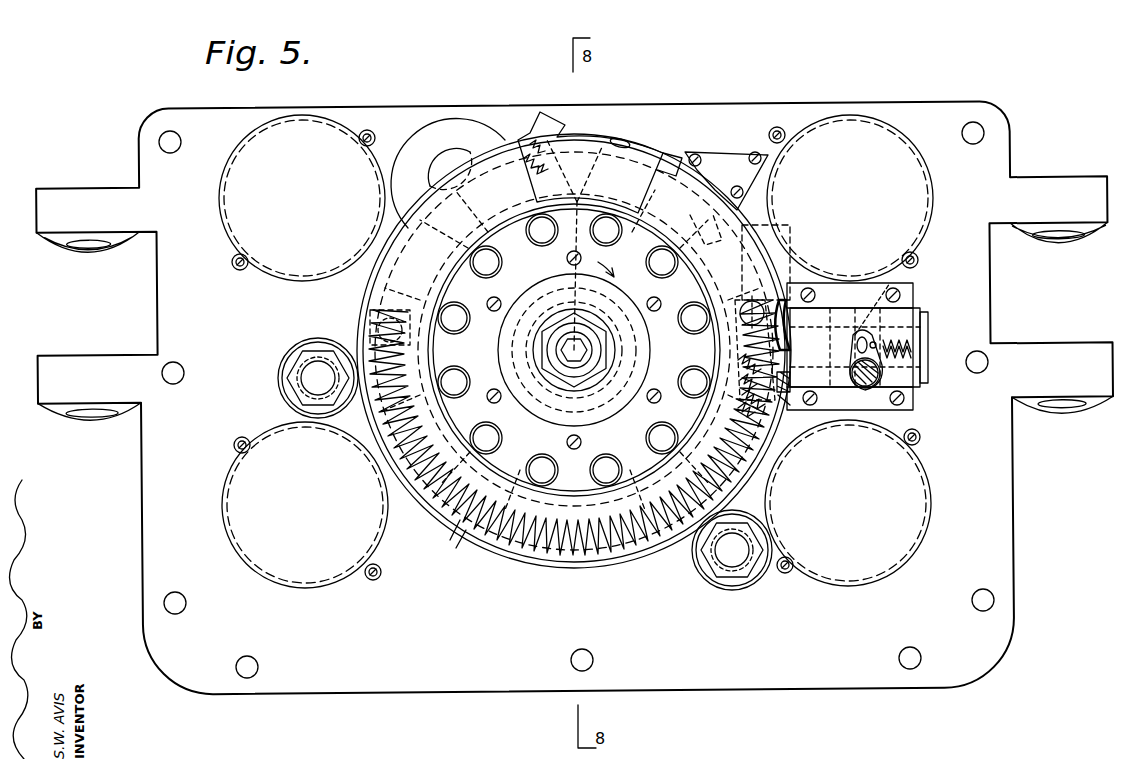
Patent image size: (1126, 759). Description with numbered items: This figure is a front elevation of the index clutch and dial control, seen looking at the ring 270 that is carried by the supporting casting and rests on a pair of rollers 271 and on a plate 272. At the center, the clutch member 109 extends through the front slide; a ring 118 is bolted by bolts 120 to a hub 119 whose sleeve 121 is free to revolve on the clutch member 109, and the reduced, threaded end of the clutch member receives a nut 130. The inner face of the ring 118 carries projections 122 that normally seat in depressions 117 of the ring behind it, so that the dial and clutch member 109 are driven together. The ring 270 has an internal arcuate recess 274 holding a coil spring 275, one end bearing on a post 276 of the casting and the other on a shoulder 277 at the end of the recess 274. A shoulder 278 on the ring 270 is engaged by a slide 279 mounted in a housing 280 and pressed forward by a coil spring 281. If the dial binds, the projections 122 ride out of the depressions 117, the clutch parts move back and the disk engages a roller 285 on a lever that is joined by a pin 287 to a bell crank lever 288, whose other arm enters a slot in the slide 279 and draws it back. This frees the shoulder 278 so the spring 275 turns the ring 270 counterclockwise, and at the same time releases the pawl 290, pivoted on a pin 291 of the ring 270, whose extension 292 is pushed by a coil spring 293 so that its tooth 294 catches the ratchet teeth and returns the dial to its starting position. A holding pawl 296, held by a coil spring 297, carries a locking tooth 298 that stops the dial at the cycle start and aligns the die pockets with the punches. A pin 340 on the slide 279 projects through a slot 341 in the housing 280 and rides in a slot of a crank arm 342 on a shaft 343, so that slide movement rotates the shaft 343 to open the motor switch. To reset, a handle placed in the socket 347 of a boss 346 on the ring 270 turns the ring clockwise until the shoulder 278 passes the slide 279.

The clutch member 109 is at (592, 352).
The depressions 117 is at (672, 226).
The ring 118 is at (458, 282).
The hub 119 is at (532, 349).
The bolts 120 is at (496, 300).
The sleeve 121 is at (574, 274).
The projections 122 is at (610, 213).
The nut 130 is at (578, 382).
The ring 270 is at (566, 566).
The rollers 271 is at (284, 386).
The plate 272 is at (726, 155).
The arcuate recess 274 is at (488, 556).
The coil spring 275 is at (456, 532).
The post 276 is at (364, 322).
The shoulder 277 is at (790, 428).
The shoulder 278 is at (795, 395).
The slide 279 is at (913, 300).
The housing 280 is at (908, 300).
The coil spring 281 is at (928, 326).
The roller 285 is at (748, 338).
The pin 287 is at (825, 346).
The bell crank lever 288 is at (877, 346).
The pawl 290 is at (776, 236).
The pin 291 is at (762, 300).
The extension 292 is at (795, 302).
The coil spring 293 is at (746, 307).
The tooth 294 is at (700, 212).
The holding pawl 296 is at (462, 120).
The coil spring 297 is at (580, 145).
The locking tooth 298 is at (578, 205).
The pin 340 is at (870, 330).
The slot 341 is at (866, 338).
The crank arm 342 is at (880, 370).
The shaft 343 is at (870, 388).
The boss 346 is at (668, 155).
The socket 347 is at (622, 139).